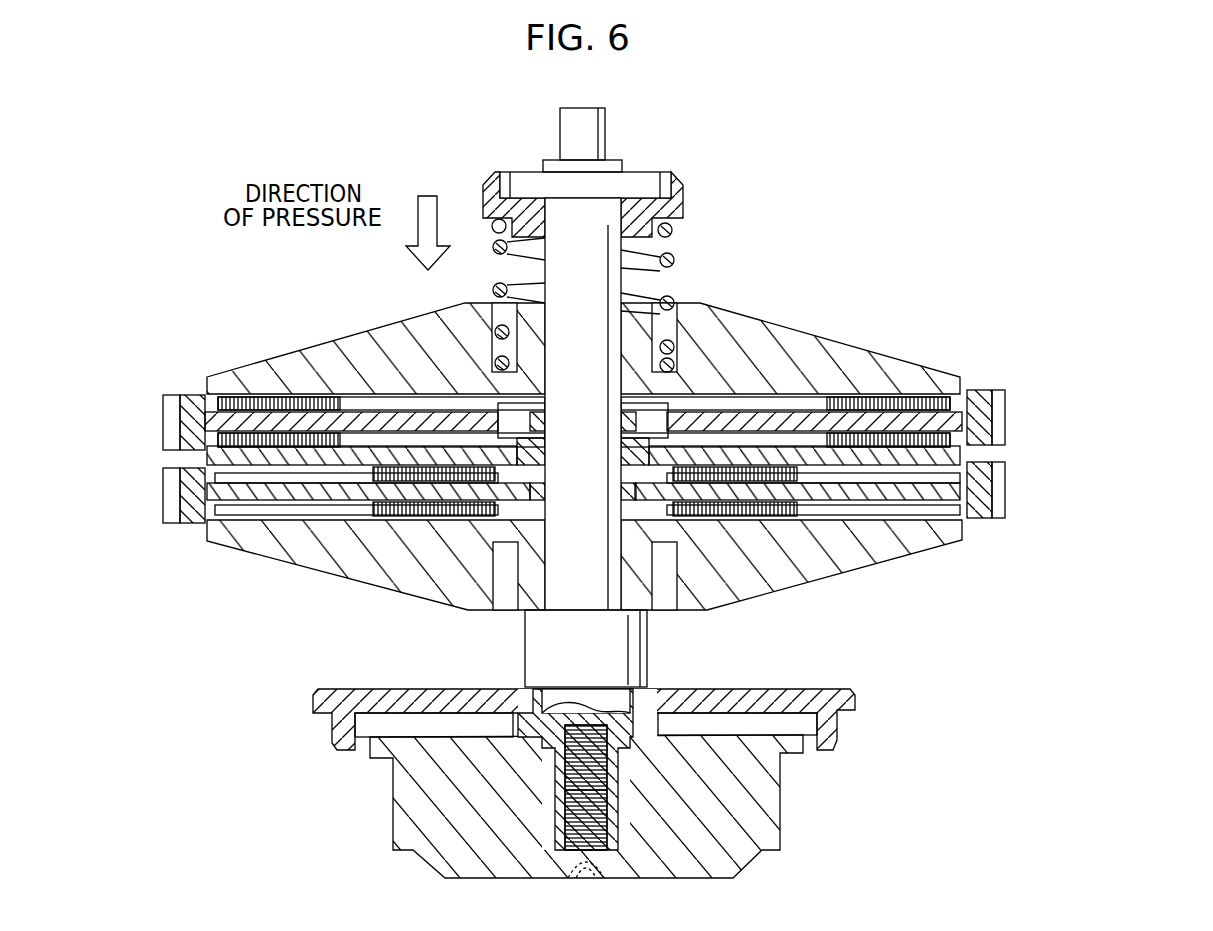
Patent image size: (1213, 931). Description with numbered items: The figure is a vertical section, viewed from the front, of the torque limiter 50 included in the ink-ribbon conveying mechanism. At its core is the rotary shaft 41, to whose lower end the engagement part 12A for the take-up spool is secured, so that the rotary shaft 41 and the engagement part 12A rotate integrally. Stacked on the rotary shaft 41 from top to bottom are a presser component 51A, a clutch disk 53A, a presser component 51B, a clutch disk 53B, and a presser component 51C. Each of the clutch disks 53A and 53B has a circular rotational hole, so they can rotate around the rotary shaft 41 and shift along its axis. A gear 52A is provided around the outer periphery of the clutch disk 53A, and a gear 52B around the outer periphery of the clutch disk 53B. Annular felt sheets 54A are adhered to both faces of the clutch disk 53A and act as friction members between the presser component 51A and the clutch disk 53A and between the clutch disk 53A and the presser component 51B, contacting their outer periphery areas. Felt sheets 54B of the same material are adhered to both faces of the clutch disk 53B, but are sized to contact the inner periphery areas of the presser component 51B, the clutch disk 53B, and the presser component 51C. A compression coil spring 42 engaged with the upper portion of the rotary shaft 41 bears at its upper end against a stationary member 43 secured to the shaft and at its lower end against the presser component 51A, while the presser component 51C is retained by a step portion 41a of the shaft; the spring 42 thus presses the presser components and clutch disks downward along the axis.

The rotary shaft 41 is at (598, 130).
The step portion 41a is at (590, 610).
The spring 42 is at (666, 262).
The stationary member 43 is at (683, 197).
The torque limiter 50 is at (672, 424).
The presser component 51A is at (821, 372).
The presser component 51B is at (862, 462).
The presser component 51C is at (885, 547).
The gear 52A is at (1000, 428).
The gear 52B is at (1000, 478).
The clutch disk 53A is at (985, 403).
The clutch disk 53B is at (985, 503).
The felt sheets 54A is at (316, 447).
The felt sheets 54B is at (452, 495).
The engagement part 12A is at (772, 803).